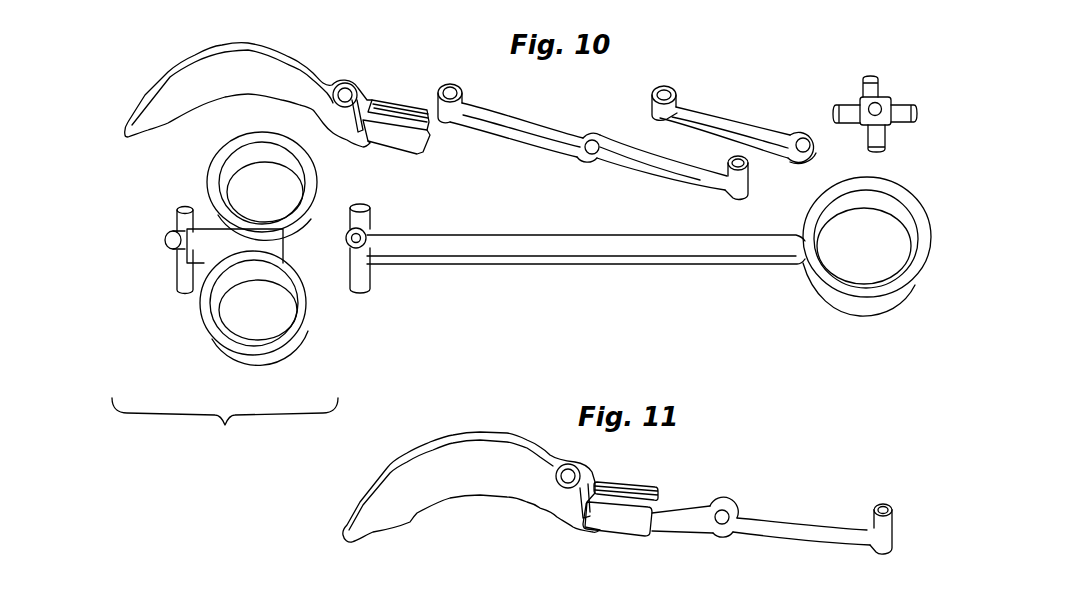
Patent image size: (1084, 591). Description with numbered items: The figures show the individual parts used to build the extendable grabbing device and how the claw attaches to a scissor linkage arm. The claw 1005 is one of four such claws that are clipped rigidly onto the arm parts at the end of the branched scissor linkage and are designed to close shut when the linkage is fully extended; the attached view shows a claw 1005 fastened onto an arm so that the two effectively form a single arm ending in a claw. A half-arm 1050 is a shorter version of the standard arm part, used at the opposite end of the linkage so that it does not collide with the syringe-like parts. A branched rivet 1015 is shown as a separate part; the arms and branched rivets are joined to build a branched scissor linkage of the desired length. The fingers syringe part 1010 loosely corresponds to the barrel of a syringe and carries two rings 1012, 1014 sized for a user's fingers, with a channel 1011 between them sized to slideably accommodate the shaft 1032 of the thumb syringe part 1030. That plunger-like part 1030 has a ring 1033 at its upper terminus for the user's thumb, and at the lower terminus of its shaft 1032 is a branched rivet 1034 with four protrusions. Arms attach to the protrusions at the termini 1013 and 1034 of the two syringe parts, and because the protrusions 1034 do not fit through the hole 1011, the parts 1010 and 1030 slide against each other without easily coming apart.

In FIG. 10, the claw 1005 is at (325, 76).
In FIG. 11, the claw 1005 is at (457, 436).
In FIG. 10, the fingers syringe part 1010 is at (512, 125).
In FIG. 11, the fingers syringe part 1010 is at (777, 521).
In FIG. 10, the channel 1011 is at (292, 262).
In FIG. 10, the ring 1012 is at (241, 366).
In FIG. 10, the terminus 1013 is at (168, 257).
In FIG. 10, the ring 1014 is at (315, 186).
In FIG. 10, the cross pin 1015 is at (874, 73).
In FIG. 10, the thumb syringe part 1030 is at (668, 267).
In FIG. 10, the shaft 1032 is at (497, 235).
In FIG. 10, the ring 1033 is at (897, 242).
In FIG. 10, the branched rivet 1034 is at (366, 222).
In FIG. 10, the half-arm 1050 is at (700, 114).